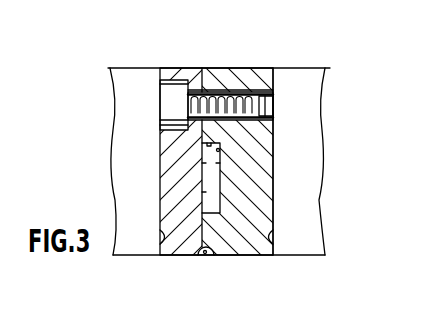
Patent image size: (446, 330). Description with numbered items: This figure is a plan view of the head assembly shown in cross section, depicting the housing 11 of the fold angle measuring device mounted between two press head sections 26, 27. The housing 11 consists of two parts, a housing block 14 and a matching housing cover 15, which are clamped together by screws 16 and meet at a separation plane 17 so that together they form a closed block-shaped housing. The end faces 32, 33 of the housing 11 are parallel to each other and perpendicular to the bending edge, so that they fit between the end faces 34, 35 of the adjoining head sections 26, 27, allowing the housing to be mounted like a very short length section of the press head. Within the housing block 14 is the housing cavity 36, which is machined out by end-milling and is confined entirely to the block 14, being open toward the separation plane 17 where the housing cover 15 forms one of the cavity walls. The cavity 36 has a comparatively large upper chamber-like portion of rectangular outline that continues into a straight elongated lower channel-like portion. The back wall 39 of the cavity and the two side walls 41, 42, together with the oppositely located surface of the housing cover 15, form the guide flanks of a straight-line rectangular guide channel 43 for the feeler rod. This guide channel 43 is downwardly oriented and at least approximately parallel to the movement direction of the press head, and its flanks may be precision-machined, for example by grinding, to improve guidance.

The housing 11 is at (206, 63).
The housing block 14 is at (247, 246).
The housing cover 15 is at (175, 246).
The screws 16 is at (215, 102).
The separation plane 17 is at (210, 250).
The head section 26 is at (122, 88).
The head section 27 is at (303, 83).
The end face 32 is at (154, 140).
The end face 33 is at (281, 123).
The end face 34 is at (161, 242).
The end face 35 is at (265, 250).
The housing cavity 36 is at (195, 192).
The back wall 39 is at (219, 152).
The side wall 41 is at (233, 110).
The side wall 42 is at (221, 174).
The guide channel 43 is at (195, 160).